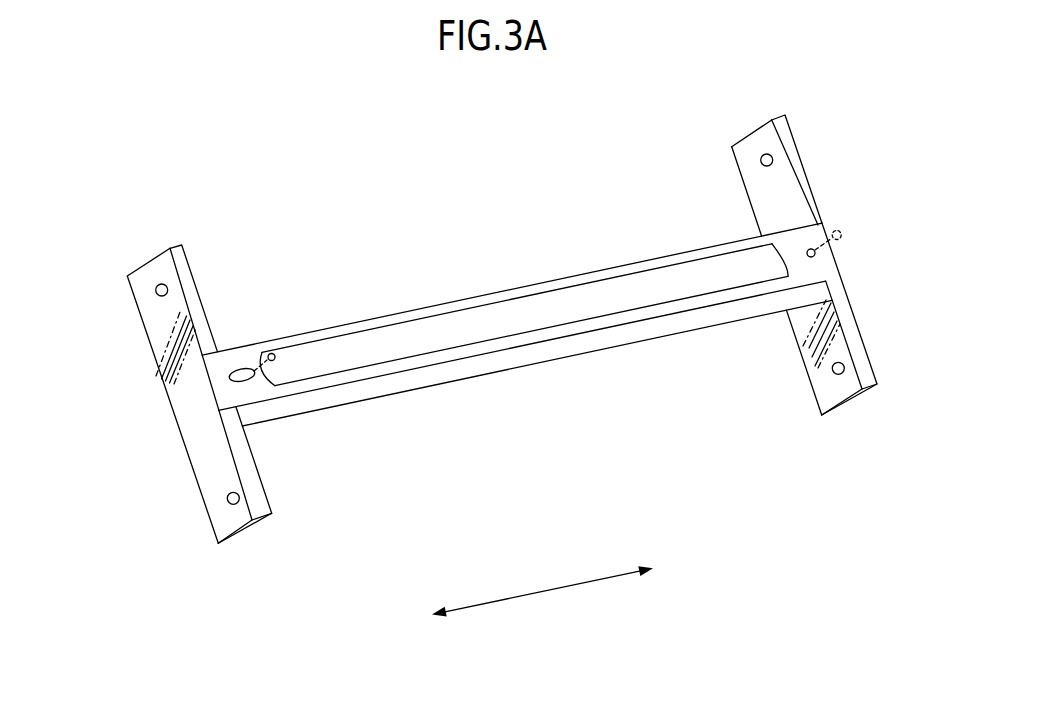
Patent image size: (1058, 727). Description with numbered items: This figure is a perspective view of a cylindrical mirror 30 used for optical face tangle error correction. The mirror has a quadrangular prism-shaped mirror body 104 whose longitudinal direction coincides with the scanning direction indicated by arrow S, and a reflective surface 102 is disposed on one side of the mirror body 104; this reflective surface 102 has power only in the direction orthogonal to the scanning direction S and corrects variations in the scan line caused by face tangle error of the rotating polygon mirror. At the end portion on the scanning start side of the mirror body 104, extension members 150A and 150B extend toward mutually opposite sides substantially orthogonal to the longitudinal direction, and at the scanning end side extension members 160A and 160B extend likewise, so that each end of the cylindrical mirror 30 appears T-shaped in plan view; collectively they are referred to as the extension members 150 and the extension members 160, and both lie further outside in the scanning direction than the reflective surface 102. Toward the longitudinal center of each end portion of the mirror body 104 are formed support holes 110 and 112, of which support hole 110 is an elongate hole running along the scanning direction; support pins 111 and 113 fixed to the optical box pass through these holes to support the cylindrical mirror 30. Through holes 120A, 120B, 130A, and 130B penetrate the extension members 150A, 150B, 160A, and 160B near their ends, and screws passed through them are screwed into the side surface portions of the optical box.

The cylindrical mirror 30 is at (522, 247).
The reflective surface 102 is at (517, 320).
The mirror body 104 is at (643, 332).
The support hole 110 is at (240, 369).
The support pin 111 is at (272, 353).
The support hole 112 is at (815, 253).
The support pin 113 is at (841, 235).
The through hole 120A is at (155, 291).
The through hole 120B is at (227, 500).
The through hole 130A is at (773, 161).
The through hole 130B is at (845, 368).
The extension members 150 is at (180, 402).
The extension member 150A is at (181, 264).
The extension member 150B is at (254, 483).
The extension members 160 is at (846, 301).
The extension member 160A is at (752, 185).
The extension member 160B is at (816, 395).
The scanning direction S is at (541, 592).